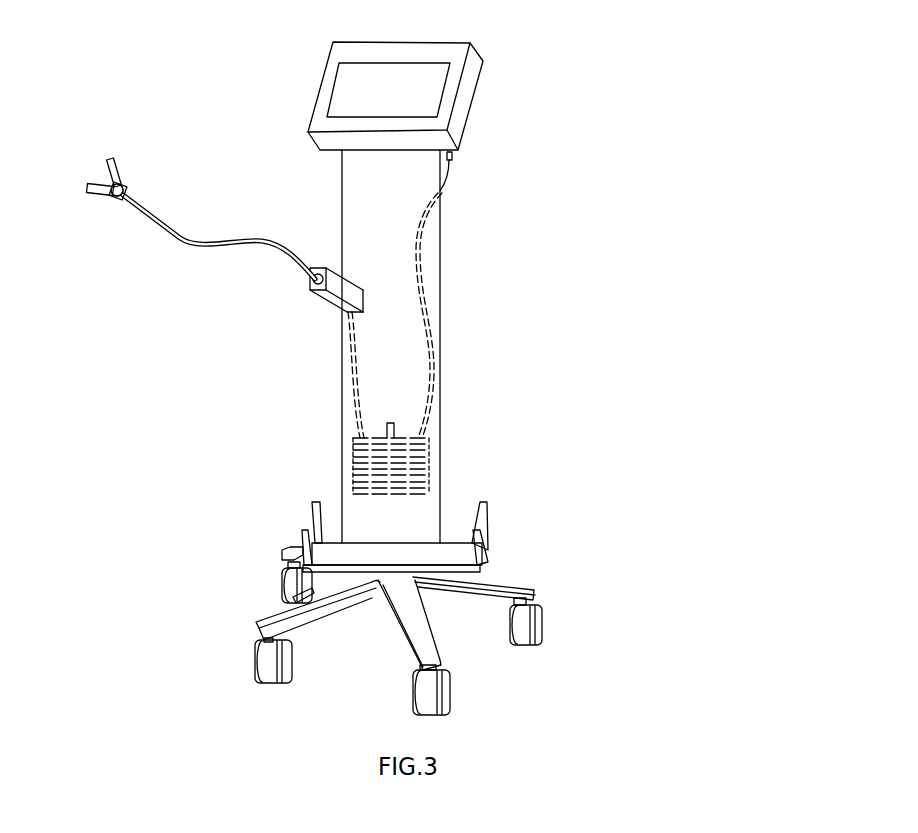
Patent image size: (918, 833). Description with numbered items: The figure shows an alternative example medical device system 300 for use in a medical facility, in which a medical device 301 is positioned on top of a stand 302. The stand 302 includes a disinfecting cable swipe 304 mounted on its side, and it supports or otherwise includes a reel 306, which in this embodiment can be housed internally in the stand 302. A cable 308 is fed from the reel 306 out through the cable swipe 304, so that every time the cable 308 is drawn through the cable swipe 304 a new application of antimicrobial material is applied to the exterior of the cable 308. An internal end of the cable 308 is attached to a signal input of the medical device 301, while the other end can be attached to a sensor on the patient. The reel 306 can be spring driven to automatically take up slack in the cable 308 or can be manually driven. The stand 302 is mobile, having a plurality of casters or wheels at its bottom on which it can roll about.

The medical device system 300 is at (793, 34).
The medical device 301 is at (453, 53).
The stand 302 is at (470, 246).
The cable swipe 304 is at (312, 288).
The reel 306 is at (353, 455).
The cable 308 is at (183, 240).